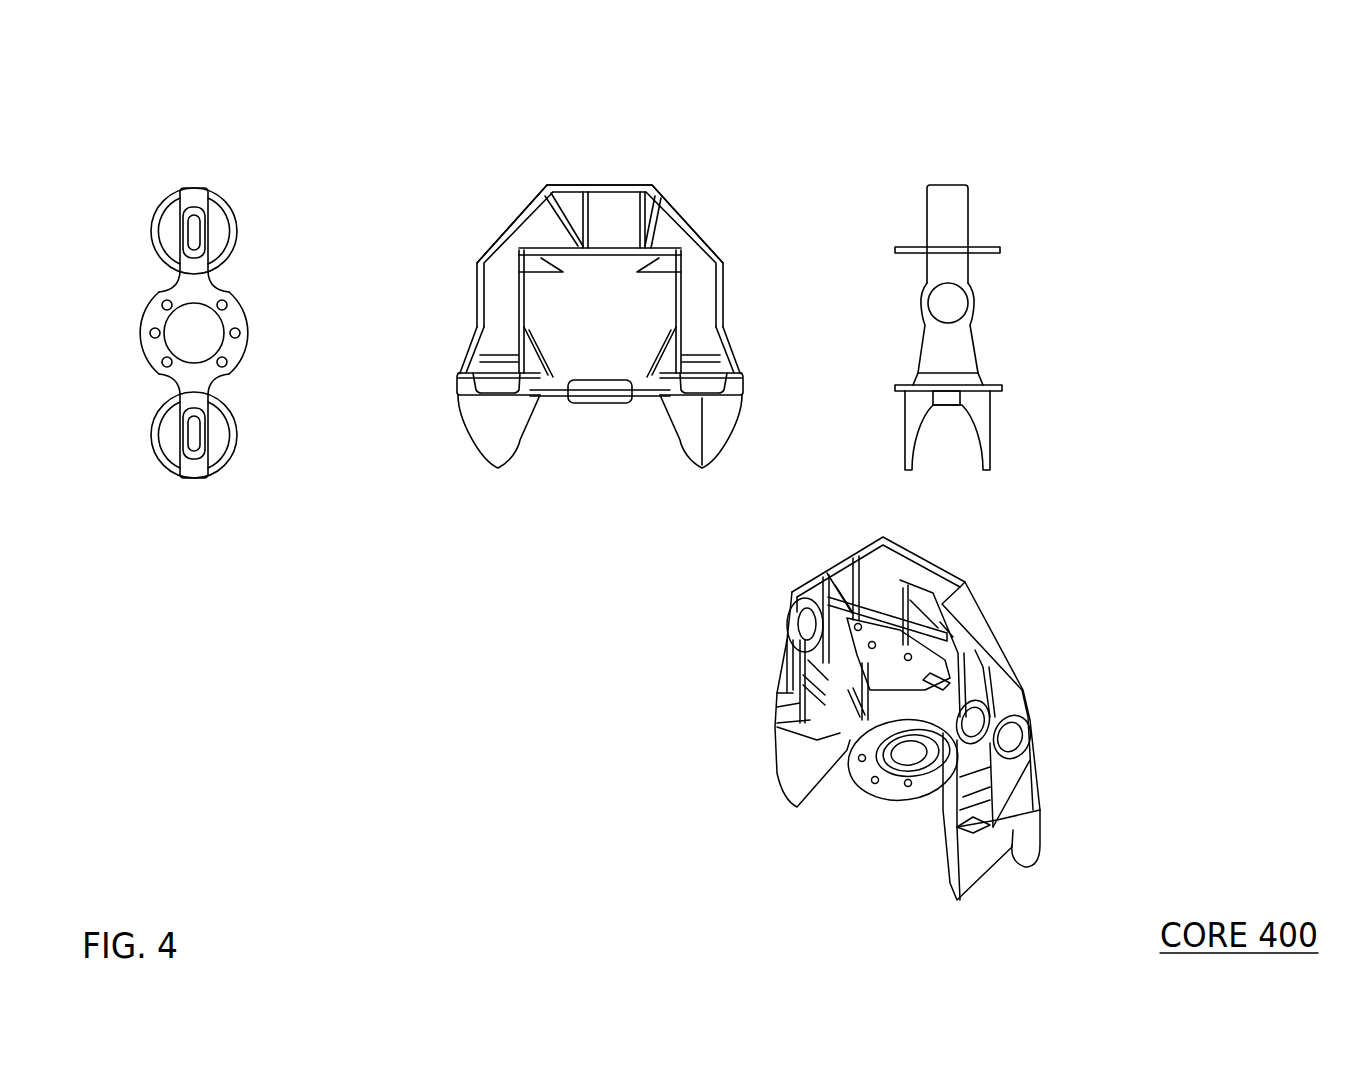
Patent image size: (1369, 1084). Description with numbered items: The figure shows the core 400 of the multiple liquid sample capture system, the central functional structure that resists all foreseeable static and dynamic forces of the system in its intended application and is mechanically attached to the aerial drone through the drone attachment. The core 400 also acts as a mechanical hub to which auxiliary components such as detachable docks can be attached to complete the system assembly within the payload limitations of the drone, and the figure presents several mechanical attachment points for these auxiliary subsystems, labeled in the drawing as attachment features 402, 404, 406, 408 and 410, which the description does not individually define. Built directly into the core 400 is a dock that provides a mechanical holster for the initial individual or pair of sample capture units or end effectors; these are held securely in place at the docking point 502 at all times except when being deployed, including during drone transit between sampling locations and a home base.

The core 400 is at (615, 324).
The bottom tab 402 is at (565, 408).
The top frame 404 is at (533, 258).
The cross bar 406 is at (1013, 240).
The base flange 408 is at (1007, 385).
The pivot hole 410 is at (966, 302).
The docking point 502 is at (456, 422).